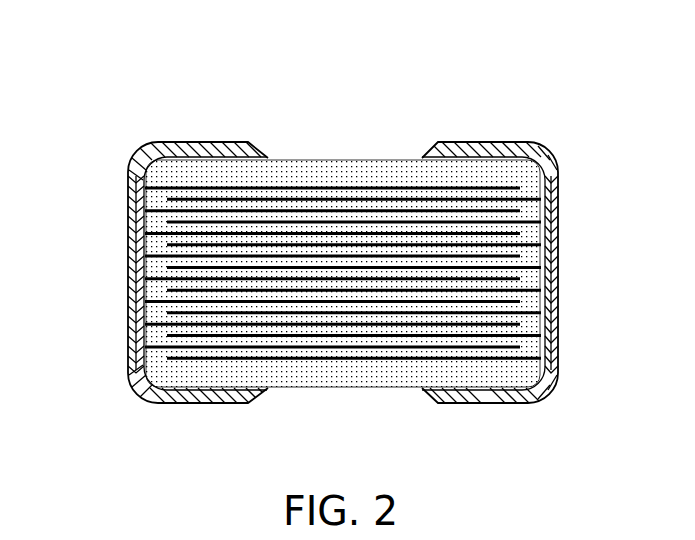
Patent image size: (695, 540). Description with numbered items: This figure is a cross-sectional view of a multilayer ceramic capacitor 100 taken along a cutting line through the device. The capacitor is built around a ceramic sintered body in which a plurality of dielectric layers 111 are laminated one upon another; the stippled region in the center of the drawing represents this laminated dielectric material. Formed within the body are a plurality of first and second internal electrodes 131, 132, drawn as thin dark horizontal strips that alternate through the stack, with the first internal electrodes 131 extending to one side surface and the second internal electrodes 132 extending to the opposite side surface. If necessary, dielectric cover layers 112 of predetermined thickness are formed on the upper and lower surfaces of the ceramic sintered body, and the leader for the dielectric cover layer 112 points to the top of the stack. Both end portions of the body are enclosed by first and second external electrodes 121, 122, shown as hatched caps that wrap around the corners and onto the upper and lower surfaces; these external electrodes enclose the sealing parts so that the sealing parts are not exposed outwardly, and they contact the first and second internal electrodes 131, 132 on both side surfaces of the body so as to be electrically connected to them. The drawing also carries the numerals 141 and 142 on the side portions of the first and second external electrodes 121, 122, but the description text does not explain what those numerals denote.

The multilayer ceramic capacitor 100 is at (365, 33).
The dielectric layer 111 is at (155, 313).
The dielectric cover layer 112 is at (298, 188).
The first external electrode 121 is at (160, 244).
The second external electrode 122 is at (527, 244).
The first internal electrode 131 is at (208, 190).
The second internal electrode 132 is at (488, 198).
The first conductive layer 141 is at (130, 248).
The second conductive layer 142 is at (556, 248).